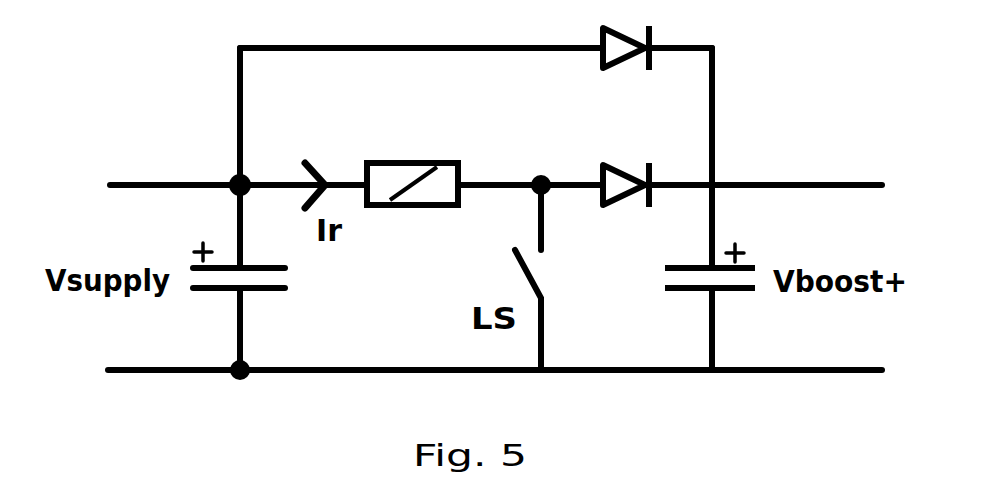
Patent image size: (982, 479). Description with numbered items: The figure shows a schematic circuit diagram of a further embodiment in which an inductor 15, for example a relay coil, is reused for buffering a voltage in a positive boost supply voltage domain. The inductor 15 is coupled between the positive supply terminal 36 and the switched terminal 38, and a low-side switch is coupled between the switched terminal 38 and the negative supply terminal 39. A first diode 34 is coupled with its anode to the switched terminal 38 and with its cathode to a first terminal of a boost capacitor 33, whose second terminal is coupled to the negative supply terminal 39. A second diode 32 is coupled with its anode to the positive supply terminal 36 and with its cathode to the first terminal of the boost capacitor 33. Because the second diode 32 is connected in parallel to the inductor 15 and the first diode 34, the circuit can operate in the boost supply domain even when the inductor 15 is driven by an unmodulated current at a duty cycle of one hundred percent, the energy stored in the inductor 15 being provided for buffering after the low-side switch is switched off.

The inductor 15 is at (443, 192).
The second diode 32 is at (629, 58).
The boost capacitor 33 is at (735, 292).
The first diode 34 is at (630, 200).
The positive supply terminal 36 is at (232, 178).
The switched terminal 38 is at (541, 173).
The negative supply terminal 39 is at (236, 380).